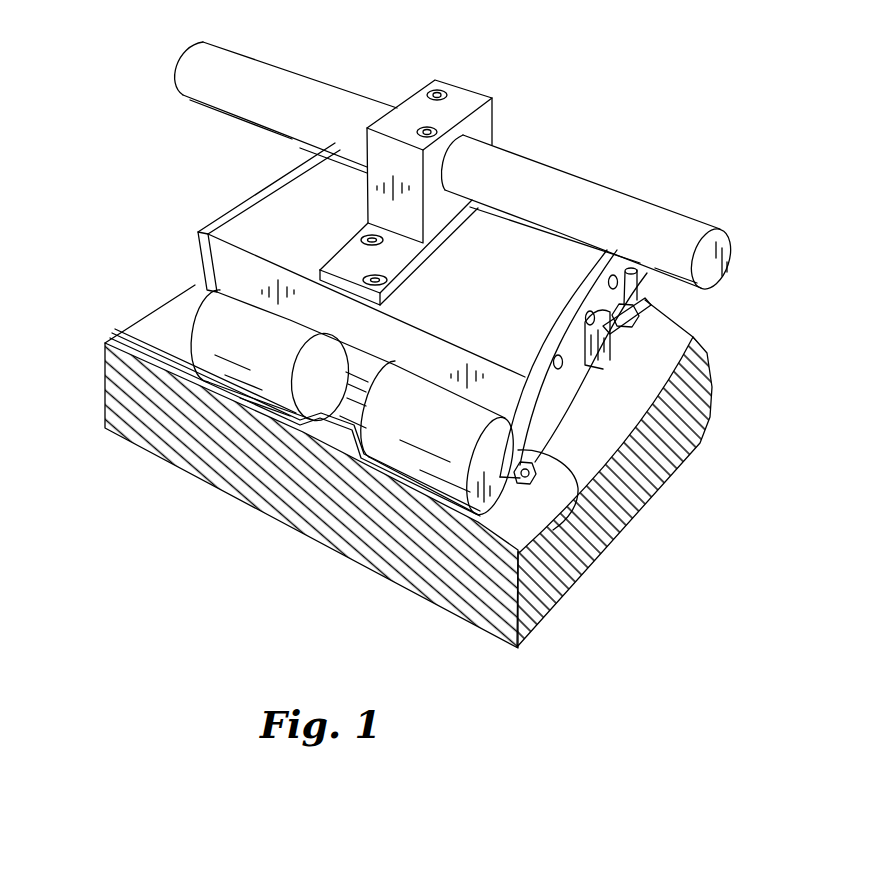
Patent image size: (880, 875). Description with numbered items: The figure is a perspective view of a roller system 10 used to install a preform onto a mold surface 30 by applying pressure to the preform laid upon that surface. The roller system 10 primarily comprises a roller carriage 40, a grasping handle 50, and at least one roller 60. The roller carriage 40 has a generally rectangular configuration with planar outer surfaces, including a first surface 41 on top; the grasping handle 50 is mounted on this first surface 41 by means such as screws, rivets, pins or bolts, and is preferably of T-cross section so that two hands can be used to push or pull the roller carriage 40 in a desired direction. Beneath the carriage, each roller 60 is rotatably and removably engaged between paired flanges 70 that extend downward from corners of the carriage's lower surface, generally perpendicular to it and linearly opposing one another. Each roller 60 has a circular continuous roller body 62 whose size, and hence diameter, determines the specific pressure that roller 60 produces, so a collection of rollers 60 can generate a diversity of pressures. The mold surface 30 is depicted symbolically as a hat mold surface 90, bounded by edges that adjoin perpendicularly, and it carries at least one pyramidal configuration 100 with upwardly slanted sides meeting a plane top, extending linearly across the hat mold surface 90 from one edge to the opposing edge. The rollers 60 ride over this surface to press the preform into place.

The roller system 10 is at (535, 99).
The mold surface 30 is at (711, 308).
The roller carriage 40 is at (404, 280).
The first surface 41 is at (287, 190).
The grasping handle 50 is at (700, 218).
The roller 60 is at (276, 389).
The roller body 62 is at (223, 350).
The paired flanges 70 is at (588, 520).
The hat mold surface 90 is at (698, 418).
The pyramidal configuration 100 is at (334, 424).